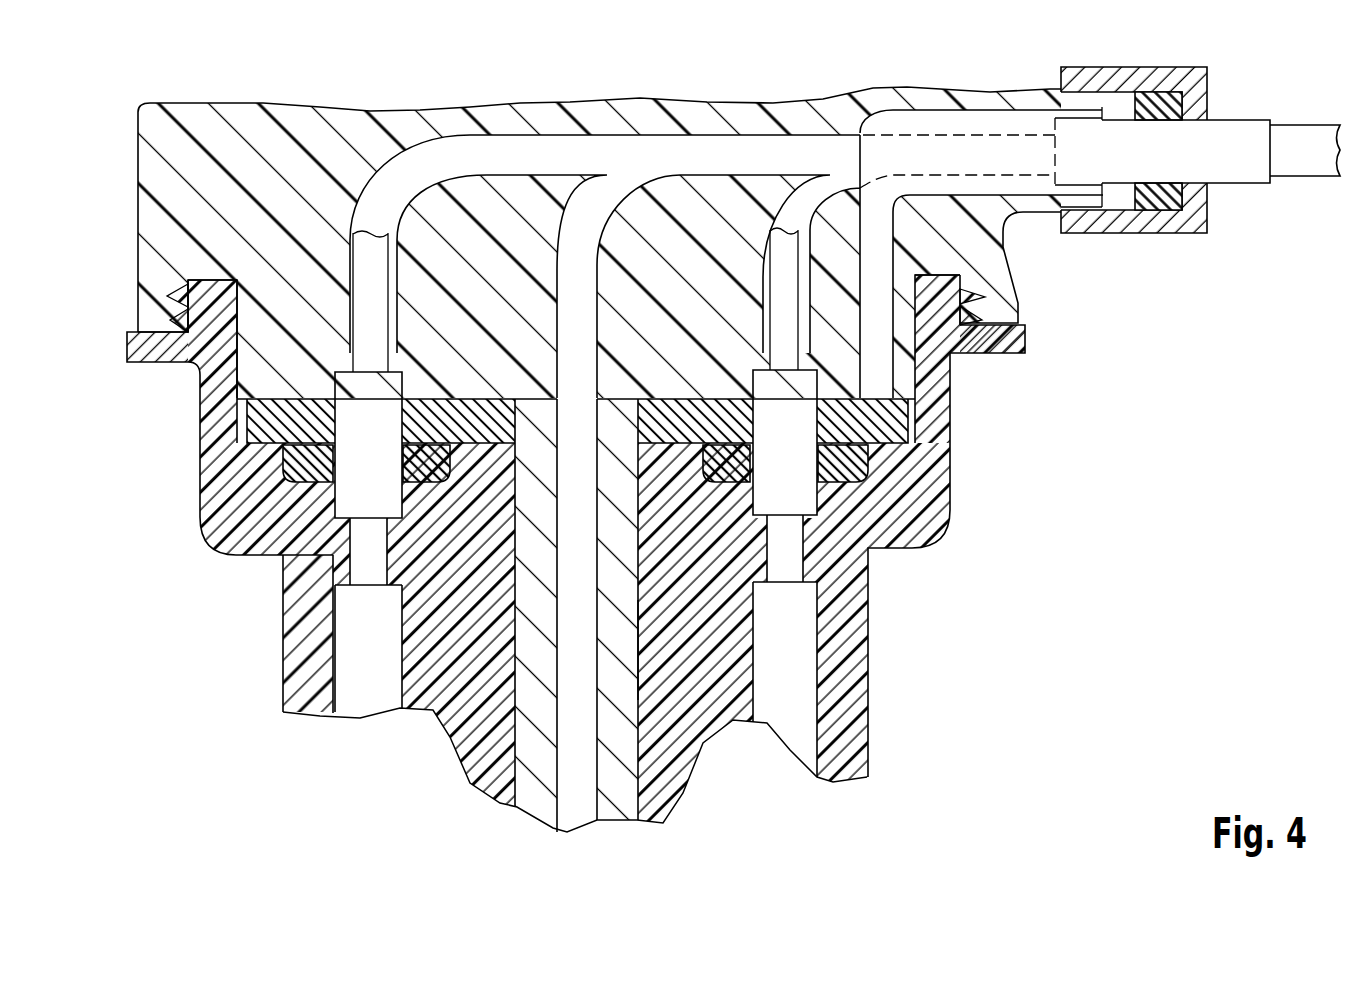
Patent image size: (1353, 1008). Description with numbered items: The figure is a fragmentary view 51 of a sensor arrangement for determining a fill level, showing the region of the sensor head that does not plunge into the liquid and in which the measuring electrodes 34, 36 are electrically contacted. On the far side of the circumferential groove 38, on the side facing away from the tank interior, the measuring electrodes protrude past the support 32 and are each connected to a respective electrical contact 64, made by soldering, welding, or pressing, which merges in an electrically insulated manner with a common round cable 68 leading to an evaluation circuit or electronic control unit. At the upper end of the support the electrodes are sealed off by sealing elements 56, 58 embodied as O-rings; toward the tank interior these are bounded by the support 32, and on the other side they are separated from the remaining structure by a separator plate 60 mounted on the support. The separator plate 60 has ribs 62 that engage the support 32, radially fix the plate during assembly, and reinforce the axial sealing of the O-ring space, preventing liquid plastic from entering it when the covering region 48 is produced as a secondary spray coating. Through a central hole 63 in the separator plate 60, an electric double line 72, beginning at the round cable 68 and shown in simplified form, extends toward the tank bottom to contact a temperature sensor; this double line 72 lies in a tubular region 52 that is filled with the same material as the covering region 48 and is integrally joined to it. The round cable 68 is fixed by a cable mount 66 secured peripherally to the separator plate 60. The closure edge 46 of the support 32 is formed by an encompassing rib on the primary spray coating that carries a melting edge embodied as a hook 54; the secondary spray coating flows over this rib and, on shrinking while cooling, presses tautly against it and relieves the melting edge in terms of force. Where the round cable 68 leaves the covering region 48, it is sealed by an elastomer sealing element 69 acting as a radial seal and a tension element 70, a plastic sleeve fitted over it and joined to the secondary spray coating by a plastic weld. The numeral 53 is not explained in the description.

The support 32 is at (868, 630).
The measuring electrode 34 is at (807, 725).
The measuring electrode 36 is at (358, 697).
The circumferential groove 38 is at (350, 560).
The closure edge 46 is at (127, 345).
The covering region 48 is at (203, 123).
The fragmentary view 51 is at (1030, 444).
The tubular region 52 is at (620, 738).
The pipe wall 53 is at (628, 666).
The hook 54 is at (185, 296).
The sealing element 56 is at (268, 500).
The sealing element 58 is at (865, 470).
The separator plate 60 is at (262, 420).
The ribs 62 is at (295, 455).
The central hole 63 is at (540, 417).
The electrical contact 64 is at (203, 387).
The cable mount 66 is at (887, 243).
The round cable 68 is at (1253, 177).
The sealing element 69 is at (1157, 207).
The tension element 70 is at (1193, 232).
The electric double line 72 is at (568, 797).